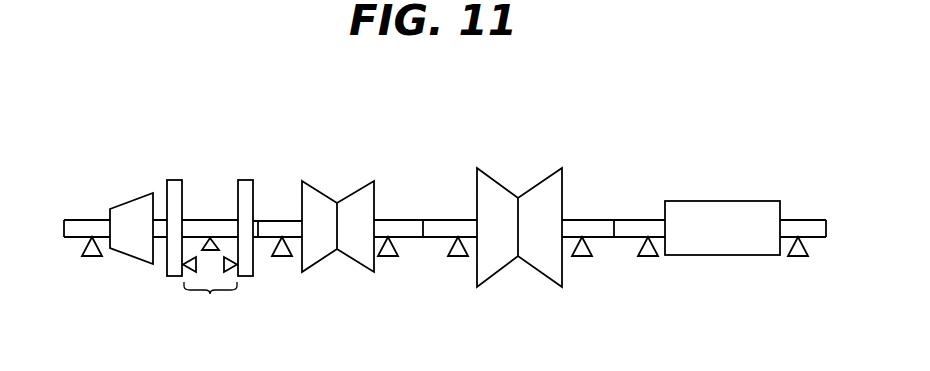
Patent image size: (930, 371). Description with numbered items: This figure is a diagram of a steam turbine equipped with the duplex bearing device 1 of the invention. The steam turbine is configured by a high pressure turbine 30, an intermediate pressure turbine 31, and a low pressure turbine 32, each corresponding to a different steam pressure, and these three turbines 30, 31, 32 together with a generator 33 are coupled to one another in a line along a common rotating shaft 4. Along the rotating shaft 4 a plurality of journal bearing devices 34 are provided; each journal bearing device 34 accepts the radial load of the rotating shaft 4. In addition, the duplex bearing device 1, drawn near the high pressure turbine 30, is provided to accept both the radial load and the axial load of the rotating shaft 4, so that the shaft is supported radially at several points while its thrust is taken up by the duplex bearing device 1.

The duplex bearing device 1 is at (210, 294).
The rotating shaft 4 is at (207, 220).
The high pressure turbine 30 is at (137, 244).
The intermediate pressure turbine 31 is at (320, 247).
The low pressure turbine 32 is at (528, 248).
The generator 33 is at (730, 238).
The journal bearing device 34 is at (92, 258).